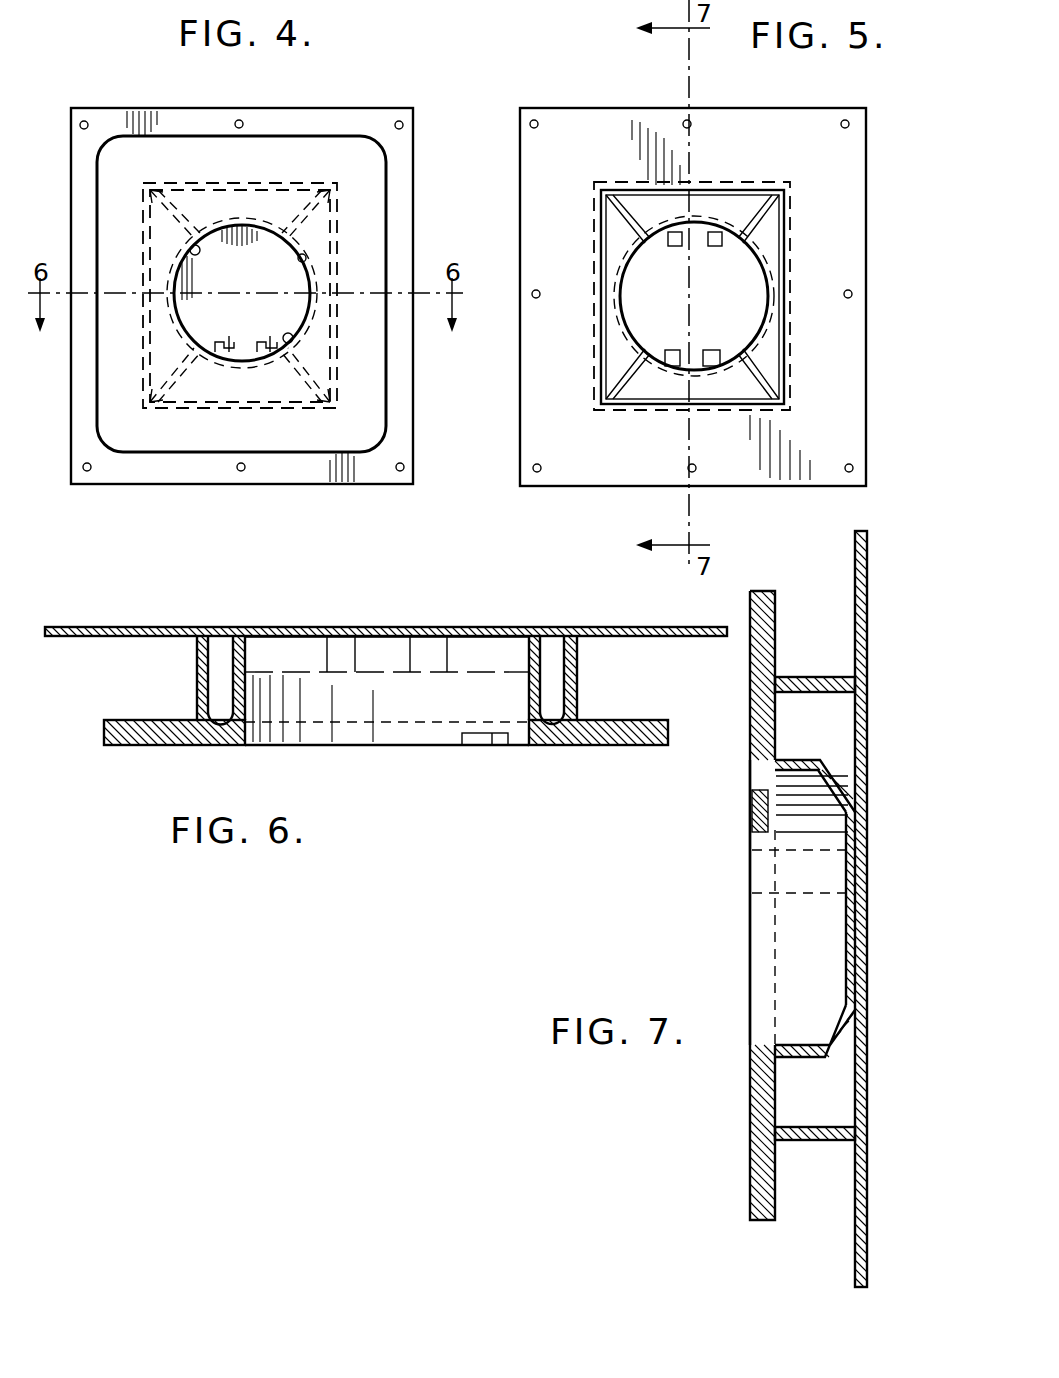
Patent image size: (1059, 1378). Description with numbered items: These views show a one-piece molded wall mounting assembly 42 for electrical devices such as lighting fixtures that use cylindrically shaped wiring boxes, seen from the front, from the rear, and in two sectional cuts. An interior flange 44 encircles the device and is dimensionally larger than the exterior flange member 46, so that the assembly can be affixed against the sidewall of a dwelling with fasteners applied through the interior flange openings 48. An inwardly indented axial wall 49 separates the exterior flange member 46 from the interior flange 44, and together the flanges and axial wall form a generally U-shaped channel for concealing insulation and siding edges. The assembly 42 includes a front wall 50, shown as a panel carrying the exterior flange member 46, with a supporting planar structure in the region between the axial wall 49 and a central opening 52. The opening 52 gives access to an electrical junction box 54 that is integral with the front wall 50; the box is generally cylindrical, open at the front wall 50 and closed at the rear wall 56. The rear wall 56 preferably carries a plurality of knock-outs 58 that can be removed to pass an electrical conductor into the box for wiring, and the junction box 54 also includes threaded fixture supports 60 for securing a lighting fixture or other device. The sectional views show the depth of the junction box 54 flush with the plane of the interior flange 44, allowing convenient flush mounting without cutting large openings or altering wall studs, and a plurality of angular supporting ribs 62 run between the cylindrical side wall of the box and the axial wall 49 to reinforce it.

In FIG. 4, the wall mounting assembly 42 is at (176, 98).
In FIG. 5, the wall mounting assembly 42 is at (630, 92).
In FIG. 6, the wall mounting assembly 42 is at (404, 764).
In FIG. 7, the wall mounting assembly 42 is at (734, 950).
In FIG. 4, the interior flange 44 is at (349, 118).
In FIG. 5, the interior flange 44 is at (561, 112).
In FIG. 6, the interior flange 44 is at (175, 628).
In FIG. 7, the interior flange 44 is at (870, 668).
In FIG. 4, the exterior flange member 46 is at (366, 176).
In FIG. 6, the exterior flange member 46 is at (135, 745).
In FIG. 7, the exterior flange member 46 is at (762, 591).
In FIG. 4, the interior flange openings 48 is at (243, 122).
In FIG. 5, the interior flange openings 48 is at (692, 124).
In FIG. 6, the interior flange openings 48 is at (90, 628).
In FIG. 7, the interior flange openings 48 is at (870, 560).
In FIG. 4, the axial wall 49 is at (178, 408).
In FIG. 5, the axial wall 49 is at (655, 410).
In FIG. 6, the axial wall 49 is at (197, 680).
In FIG. 7, the axial wall 49 is at (838, 677).
In FIG. 4, the front wall 50 is at (285, 386).
In FIG. 6, the front wall 50 is at (600, 745).
In FIG. 7, the front wall 50 is at (748, 1100).
In FIG. 4, the central opening 52 is at (306, 257).
In FIG. 6, the central opening 52 is at (262, 747).
In FIG. 7, the central opening 52 is at (783, 1043).
In FIG. 4, the electrical junction box 54 is at (318, 324).
In FIG. 5, the electrical junction box 54 is at (764, 246).
In FIG. 6, the electrical junction box 54 is at (514, 692).
In FIG. 7, the electrical junction box 54 is at (809, 864).
In FIG. 4, the rear wall 56 is at (196, 309).
In FIG. 5, the rear wall 56 is at (748, 315).
In FIG. 6, the rear wall 56 is at (318, 634).
In FIG. 7, the rear wall 56 is at (864, 915).
In FIG. 4, the knock-outs 58 is at (232, 246).
In FIG. 5, the knock-outs 58 is at (690, 246).
In FIG. 6, the knock-outs 58 is at (352, 650).
In FIG. 7, the knock-outs 58 is at (855, 778).
In FIG. 4, the threaded fixture supports 60 is at (288, 331).
In FIG. 6, the threaded fixture supports 60 is at (472, 746).
In FIG. 4, the angular supporting ribs 62 is at (200, 183).
In FIG. 5, the angular supporting ribs 62 is at (757, 200).